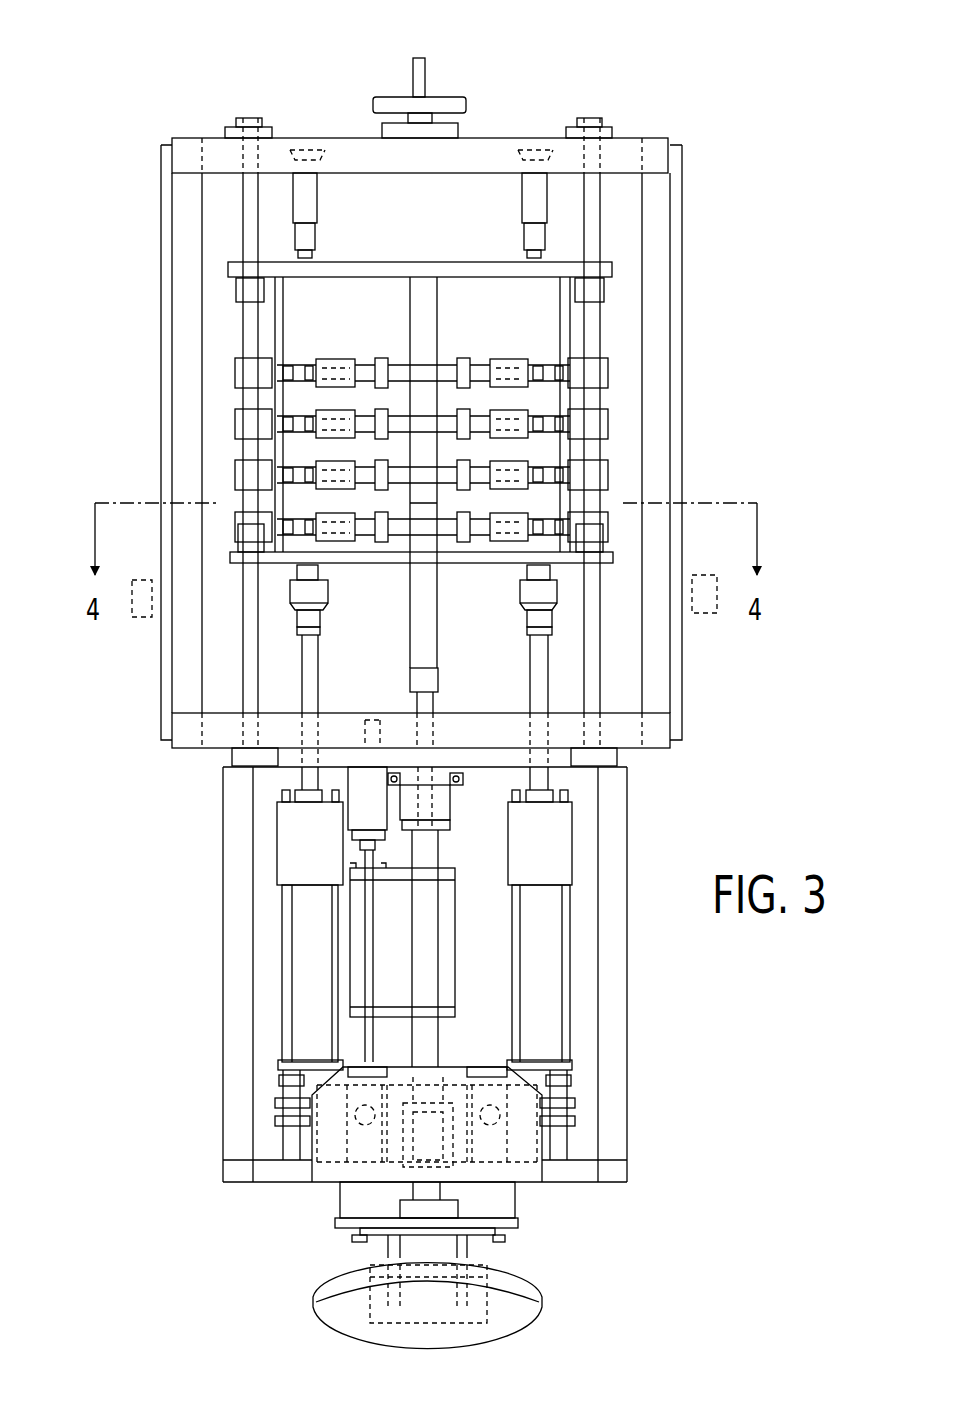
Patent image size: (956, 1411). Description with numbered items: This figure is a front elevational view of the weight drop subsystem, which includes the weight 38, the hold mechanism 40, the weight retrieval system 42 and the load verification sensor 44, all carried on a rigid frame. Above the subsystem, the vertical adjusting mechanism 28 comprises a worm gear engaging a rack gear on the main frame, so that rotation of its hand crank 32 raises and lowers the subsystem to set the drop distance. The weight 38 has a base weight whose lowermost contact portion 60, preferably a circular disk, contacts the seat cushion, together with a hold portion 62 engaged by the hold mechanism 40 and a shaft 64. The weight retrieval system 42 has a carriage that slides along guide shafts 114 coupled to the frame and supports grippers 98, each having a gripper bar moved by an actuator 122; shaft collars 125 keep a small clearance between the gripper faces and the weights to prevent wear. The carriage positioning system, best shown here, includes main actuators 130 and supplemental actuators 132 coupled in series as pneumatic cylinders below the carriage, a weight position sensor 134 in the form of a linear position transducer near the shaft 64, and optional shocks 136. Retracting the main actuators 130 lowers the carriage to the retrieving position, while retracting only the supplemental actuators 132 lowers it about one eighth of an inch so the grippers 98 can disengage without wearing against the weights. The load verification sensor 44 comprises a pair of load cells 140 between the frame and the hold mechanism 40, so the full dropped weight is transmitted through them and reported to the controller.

The mechanism 28 is at (418, 56).
The hand crank 32 is at (449, 97).
The weight 38 is at (405, 652).
The hold mechanism 40 is at (517, 1197).
The weight retrieval system 42 is at (612, 285).
The load verification sensor 44 is at (537, 1140).
The contact portion 60 is at (528, 1335).
The hold portion 62 is at (523, 1225).
The shaft 64 is at (443, 1040).
The grippers 98 is at (335, 357).
The guide shafts 114 is at (250, 663).
The actuator 122 is at (233, 360).
The shaft collars 125 is at (379, 357).
The main actuators 130 is at (283, 967).
The supplemental actuators 132 is at (282, 1138).
The weight position sensor 134 is at (452, 915).
The shocks 136 is at (310, 207).
The load cells 140 is at (348, 1087).